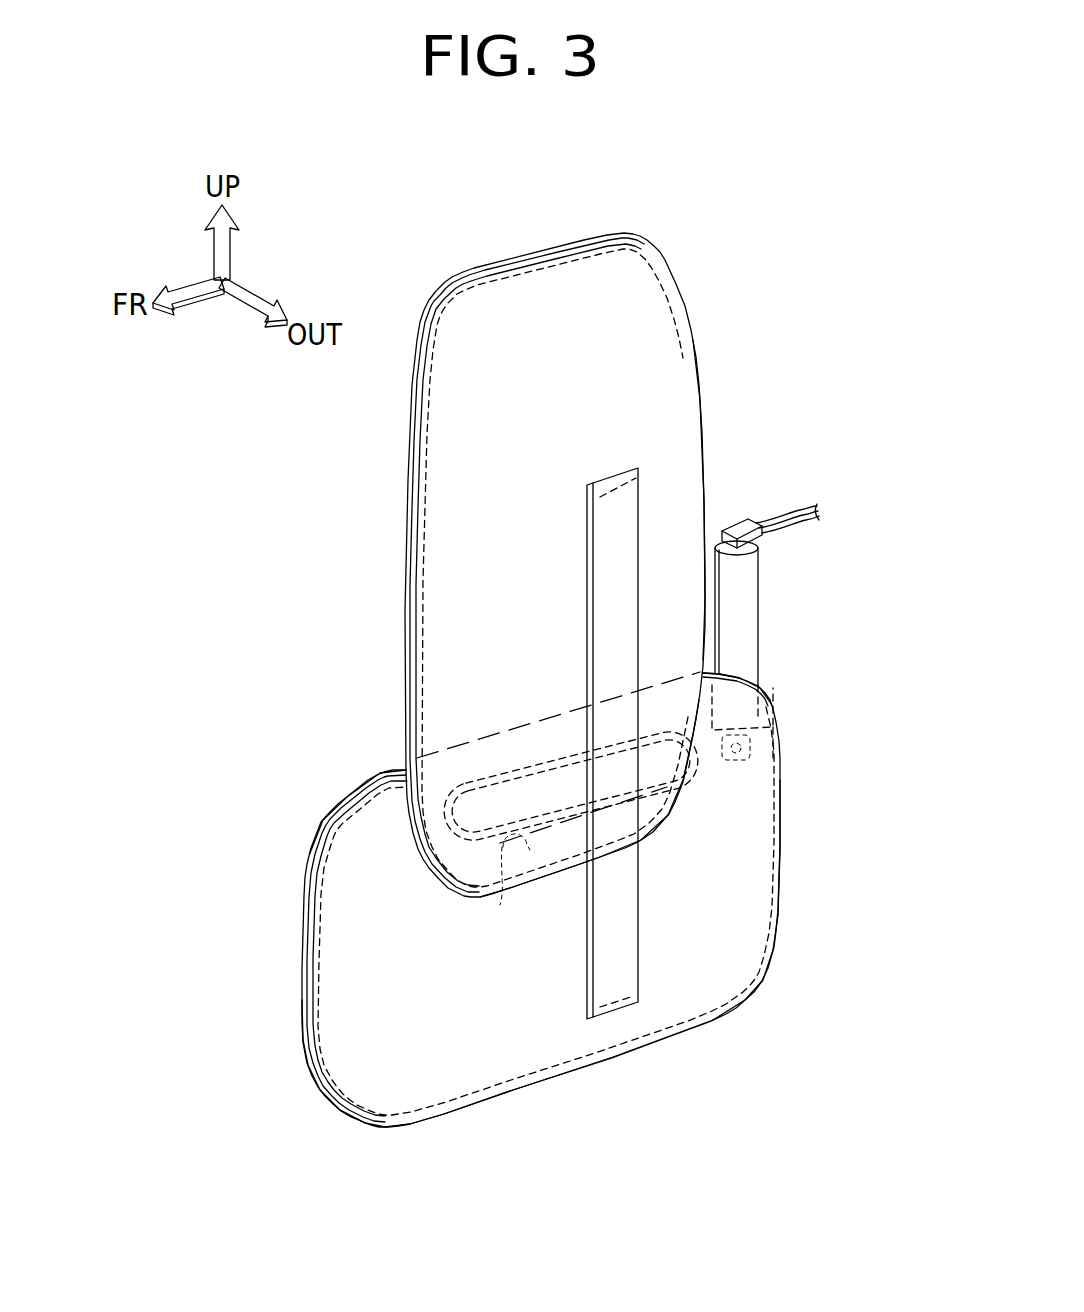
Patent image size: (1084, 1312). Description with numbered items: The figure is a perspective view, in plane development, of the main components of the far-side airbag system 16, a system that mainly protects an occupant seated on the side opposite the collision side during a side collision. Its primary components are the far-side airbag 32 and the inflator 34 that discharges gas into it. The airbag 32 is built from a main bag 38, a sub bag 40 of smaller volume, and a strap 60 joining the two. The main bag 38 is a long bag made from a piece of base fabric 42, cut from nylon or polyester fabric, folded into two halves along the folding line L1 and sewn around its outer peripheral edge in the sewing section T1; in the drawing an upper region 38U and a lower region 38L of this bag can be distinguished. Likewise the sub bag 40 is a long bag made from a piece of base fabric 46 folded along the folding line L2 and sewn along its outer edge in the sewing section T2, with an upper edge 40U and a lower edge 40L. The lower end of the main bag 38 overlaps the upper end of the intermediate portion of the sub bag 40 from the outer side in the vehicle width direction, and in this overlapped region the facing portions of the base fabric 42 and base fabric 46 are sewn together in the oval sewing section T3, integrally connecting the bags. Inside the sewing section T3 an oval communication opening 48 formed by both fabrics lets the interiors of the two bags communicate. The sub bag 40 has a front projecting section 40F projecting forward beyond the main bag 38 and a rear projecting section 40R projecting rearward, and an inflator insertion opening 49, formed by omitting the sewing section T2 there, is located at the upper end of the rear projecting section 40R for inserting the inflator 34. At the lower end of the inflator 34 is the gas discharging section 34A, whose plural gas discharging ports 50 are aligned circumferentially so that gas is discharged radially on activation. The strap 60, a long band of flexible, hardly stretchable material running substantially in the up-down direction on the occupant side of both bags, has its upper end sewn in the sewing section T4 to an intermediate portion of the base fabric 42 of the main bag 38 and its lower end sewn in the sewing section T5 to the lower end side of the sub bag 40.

The far-side airbag system 16 is at (775, 216).
The far-side airbag 32 is at (330, 607).
The inflator 34 is at (760, 593).
The gas discharging section 34A is at (725, 763).
The main bag 38 is at (609, 233).
The upper part of upper bag portion 38U is at (453, 370).
The lower part of upper bag portion 38L is at (443, 813).
The sub bag 40 is at (630, 1047).
The upper edge of lower bag portion 40U is at (357, 860).
The lower edge of lower bag portion 40L is at (357, 1067).
The front projecting section 40F is at (397, 1087).
The rear projecting section 40R is at (740, 950).
The base fabric 42 is at (514, 302).
The base fabric 46 is at (512, 1063).
The communication opening 48 is at (500, 905).
The inflator insertion opening 49 is at (745, 679).
The gas discharging ports 50 is at (775, 727).
The strap 60 is at (585, 606).
The sewing section T1 is at (420, 520).
The sewing section T2 is at (317, 963).
The sewing section T3 is at (527, 762).
The sewing section T4 is at (600, 488).
The sewing section T5 is at (618, 997).
The folding line L1 is at (706, 410).
The folding line L2 is at (783, 860).